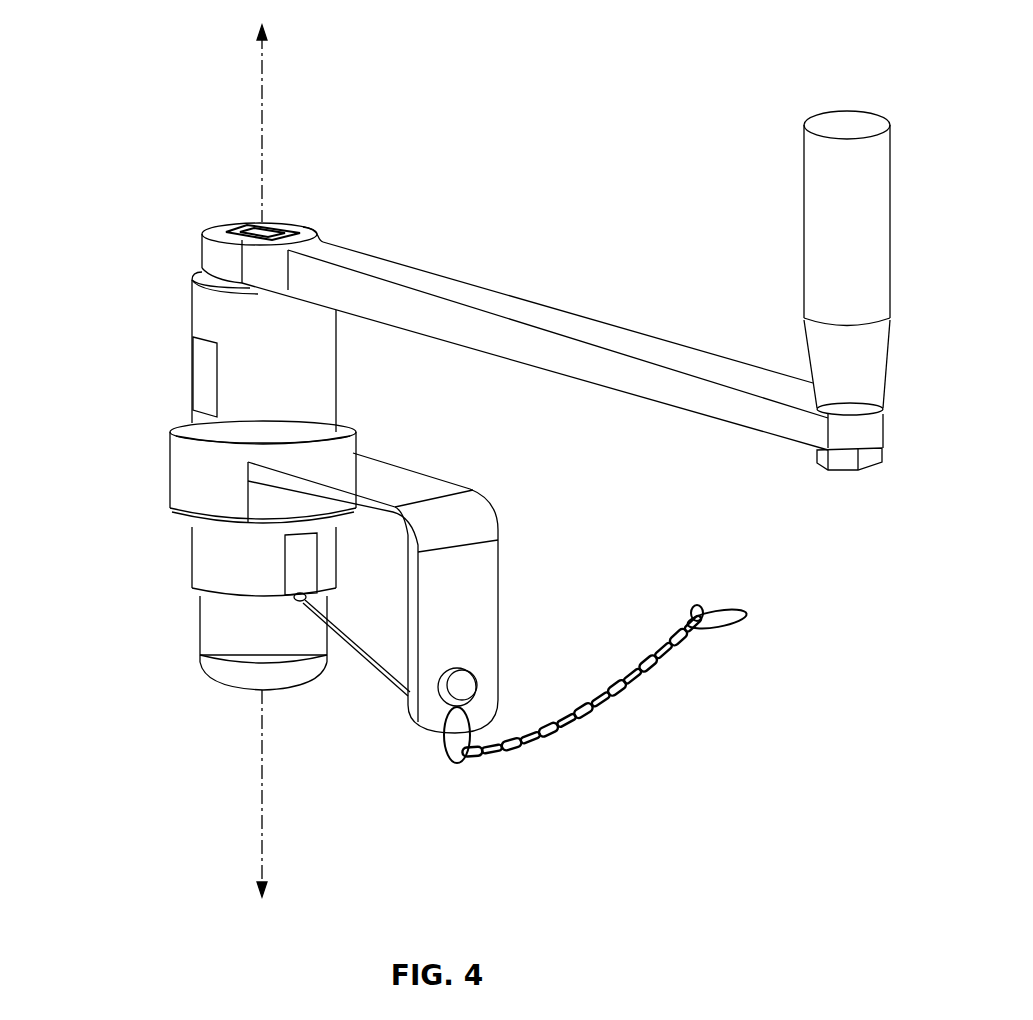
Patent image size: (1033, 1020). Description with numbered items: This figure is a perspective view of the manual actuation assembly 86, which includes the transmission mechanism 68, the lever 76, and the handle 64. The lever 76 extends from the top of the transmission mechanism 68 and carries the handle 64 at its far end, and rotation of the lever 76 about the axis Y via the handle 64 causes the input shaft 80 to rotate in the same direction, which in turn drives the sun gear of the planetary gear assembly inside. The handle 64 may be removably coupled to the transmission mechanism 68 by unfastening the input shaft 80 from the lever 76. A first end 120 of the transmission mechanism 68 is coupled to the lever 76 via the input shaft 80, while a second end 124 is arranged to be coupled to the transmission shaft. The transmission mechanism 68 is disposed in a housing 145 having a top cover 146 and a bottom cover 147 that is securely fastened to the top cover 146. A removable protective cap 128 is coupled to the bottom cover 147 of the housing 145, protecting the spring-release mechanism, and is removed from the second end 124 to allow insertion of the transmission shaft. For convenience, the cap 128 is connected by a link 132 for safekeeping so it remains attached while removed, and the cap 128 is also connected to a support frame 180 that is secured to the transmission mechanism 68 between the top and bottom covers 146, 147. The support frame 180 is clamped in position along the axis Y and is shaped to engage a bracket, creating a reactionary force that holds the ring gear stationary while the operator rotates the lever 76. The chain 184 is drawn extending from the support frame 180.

The manual actuation assembly 86 is at (459, 455).
The input shaft 80 is at (263, 228).
The lever 76 is at (446, 285).
The handle 64 is at (817, 190).
The transmission mechanism 68 is at (202, 489).
The first end 120 is at (195, 293).
The bottom cover 147 is at (267, 510).
The second end 124 is at (198, 635).
The protective cap 128 is at (235, 680).
The housing 145 is at (388, 592).
The top cover 146 is at (180, 462).
The support frame 180 is at (413, 483).
The link 132 is at (383, 670).
The chain 184 is at (625, 708).